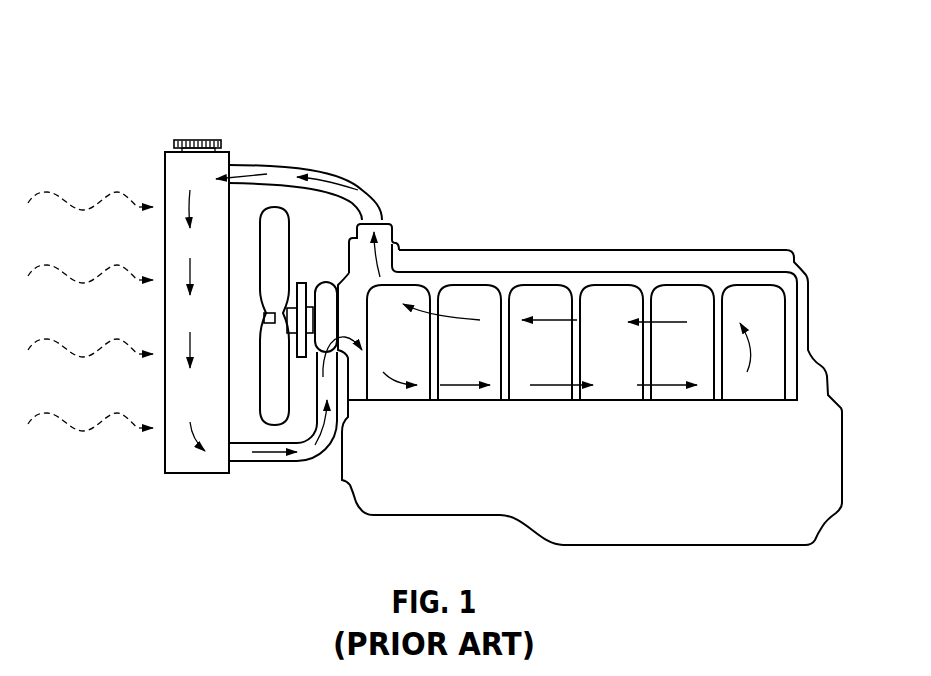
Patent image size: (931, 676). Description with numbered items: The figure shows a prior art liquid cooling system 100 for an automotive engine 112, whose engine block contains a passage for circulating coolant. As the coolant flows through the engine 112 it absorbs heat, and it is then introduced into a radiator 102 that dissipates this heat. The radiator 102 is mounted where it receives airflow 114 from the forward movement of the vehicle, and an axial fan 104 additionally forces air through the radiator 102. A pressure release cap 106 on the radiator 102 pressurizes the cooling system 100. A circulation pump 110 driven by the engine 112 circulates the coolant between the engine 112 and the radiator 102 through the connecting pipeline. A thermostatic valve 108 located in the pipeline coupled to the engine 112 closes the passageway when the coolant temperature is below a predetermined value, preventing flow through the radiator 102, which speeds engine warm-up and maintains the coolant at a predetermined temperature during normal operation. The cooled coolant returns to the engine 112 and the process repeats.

The liquid cooling system 100 is at (152, 44).
The radiator 102 is at (165, 458).
The axial fan 104 is at (273, 208).
The pressure release cap 106 is at (199, 138).
The thermostatic valve 108 is at (394, 221).
The circulation pump 110 is at (323, 283).
The automotive engine 112 is at (735, 250).
The airflow 114 is at (84, 209).